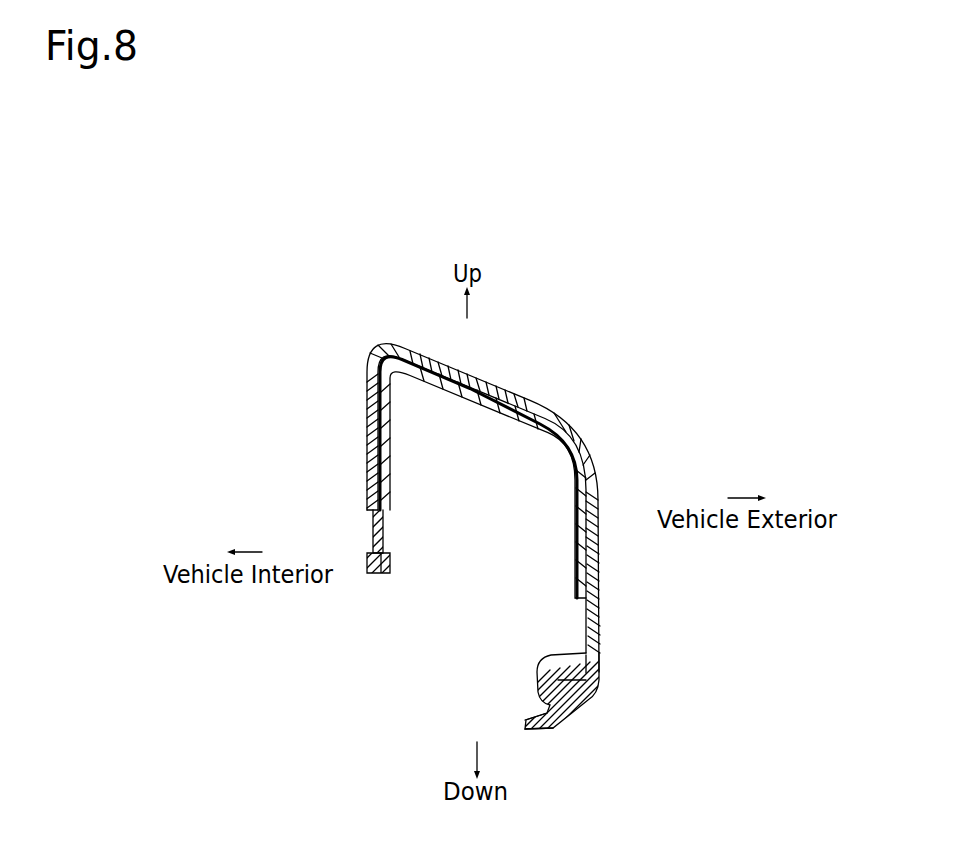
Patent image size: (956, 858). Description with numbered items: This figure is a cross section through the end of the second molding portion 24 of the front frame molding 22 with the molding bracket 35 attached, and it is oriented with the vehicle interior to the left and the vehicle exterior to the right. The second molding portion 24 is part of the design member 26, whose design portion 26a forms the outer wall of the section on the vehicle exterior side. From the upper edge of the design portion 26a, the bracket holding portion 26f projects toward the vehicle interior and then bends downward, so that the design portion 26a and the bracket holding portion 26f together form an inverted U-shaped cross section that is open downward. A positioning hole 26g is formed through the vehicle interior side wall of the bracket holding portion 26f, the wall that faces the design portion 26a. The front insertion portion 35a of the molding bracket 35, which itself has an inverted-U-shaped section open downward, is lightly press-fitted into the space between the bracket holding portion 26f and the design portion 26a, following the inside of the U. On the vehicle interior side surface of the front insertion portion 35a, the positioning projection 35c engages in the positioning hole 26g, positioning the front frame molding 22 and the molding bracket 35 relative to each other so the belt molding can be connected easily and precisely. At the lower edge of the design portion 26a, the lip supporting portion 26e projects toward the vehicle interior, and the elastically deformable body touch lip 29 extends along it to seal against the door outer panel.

The second molding portion 24 is at (485, 529).
The front frame molding 22 is at (485, 543).
The design member 26 is at (485, 508).
The bracket holding portion 26f is at (380, 427).
The positioning hole 26g is at (372, 515).
The design portion 26a is at (592, 554).
The lip supporting portion 26e is at (604, 717).
The body touch lip 29 is at (555, 726).
The molding bracket 35 is at (483, 451).
The front insertion portion 35a is at (483, 387).
The positioning projection 35c is at (372, 530).